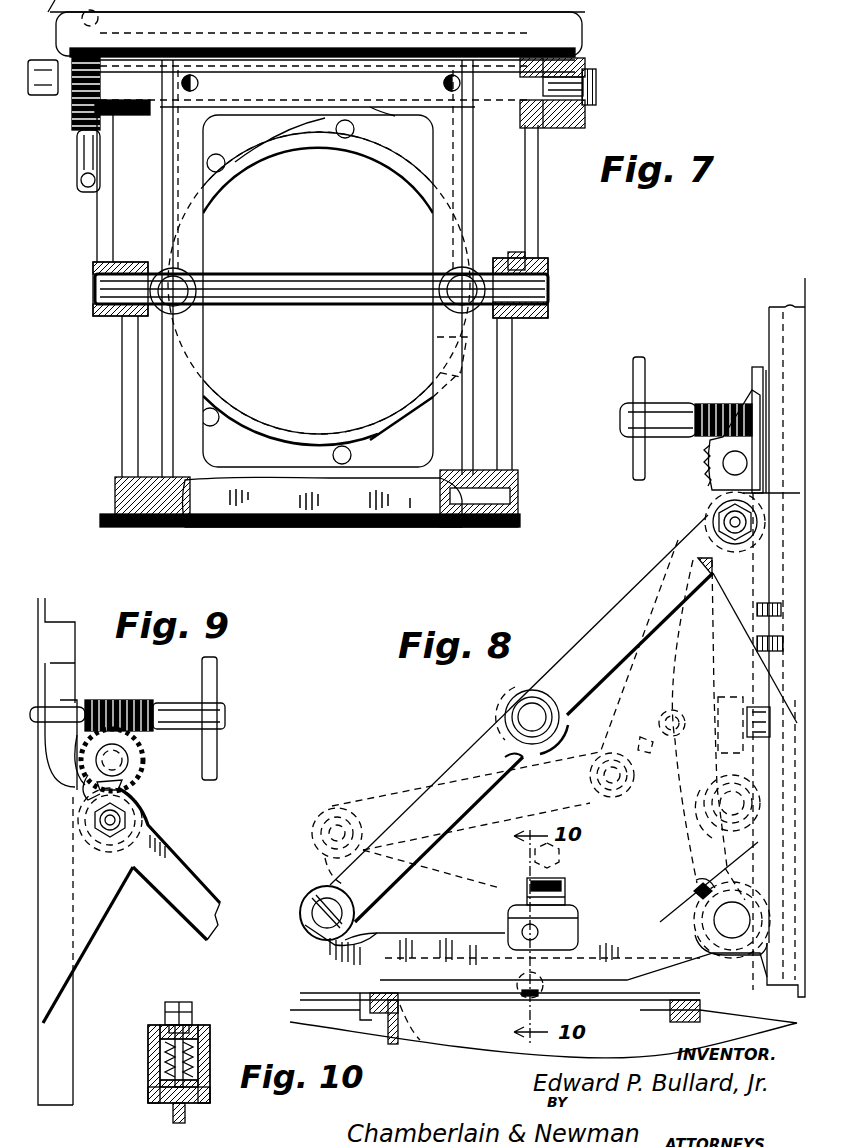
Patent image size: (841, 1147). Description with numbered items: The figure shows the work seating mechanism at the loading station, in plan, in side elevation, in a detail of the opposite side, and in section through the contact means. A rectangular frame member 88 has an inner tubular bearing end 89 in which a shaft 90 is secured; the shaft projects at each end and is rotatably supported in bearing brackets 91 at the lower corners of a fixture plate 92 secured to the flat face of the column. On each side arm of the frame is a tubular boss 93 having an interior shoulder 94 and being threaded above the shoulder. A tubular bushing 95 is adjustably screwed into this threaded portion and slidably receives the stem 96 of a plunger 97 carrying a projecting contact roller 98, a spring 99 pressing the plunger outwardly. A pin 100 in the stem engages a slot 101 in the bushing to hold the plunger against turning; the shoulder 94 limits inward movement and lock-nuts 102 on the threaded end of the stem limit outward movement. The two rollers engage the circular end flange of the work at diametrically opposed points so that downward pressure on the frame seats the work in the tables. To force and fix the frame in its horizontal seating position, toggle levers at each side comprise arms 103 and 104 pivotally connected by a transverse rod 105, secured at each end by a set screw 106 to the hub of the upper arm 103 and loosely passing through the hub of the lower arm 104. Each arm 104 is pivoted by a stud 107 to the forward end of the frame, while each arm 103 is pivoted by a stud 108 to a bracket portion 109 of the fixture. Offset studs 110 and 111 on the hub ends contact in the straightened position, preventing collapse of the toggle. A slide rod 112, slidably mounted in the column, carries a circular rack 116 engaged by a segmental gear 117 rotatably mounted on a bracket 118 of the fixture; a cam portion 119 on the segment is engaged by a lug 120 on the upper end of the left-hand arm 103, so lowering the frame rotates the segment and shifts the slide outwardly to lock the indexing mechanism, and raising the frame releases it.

In FIG. 7, the rectangular frame member 88 is at (463, 175).
In FIG. 8, the rectangular frame member 88 is at (598, 947).
In FIG. 7, the inner tubular bearing end 89 is at (390, 114).
In FIG. 8, the inner tubular bearing end 89 is at (697, 888).
In FIG. 7, the shaft 90 is at (303, 117).
In FIG. 8, the shaft 90 is at (733, 940).
In FIG. 8, the bearing brackets 91 is at (745, 862).
In FIG. 7, the fixture plate 92 is at (316, 36).
In FIG. 8, the fixture plate 92 is at (792, 990).
In FIG. 9, the fixture plate 92 is at (64, 1021).
In FIG. 7, the tubular boss 93 is at (198, 307).
In FIG. 8, the tubular boss 93 is at (570, 925).
In FIG. 10, the tubular boss 93 is at (211, 1057).
In FIG. 10, the interior shoulder 94 is at (186, 1049).
In FIG. 8, the tubular bushing 95 is at (566, 893).
In FIG. 10, the tubular bushing 95 is at (199, 1036).
In FIG. 10, the stem 96 is at (160, 1056).
In FIG. 10, the plunger 97 is at (154, 1094).
In FIG. 8, the contact roller 98 is at (515, 1000).
In FIG. 10, the contact roller 98 is at (186, 1112).
In FIG. 10, the spring 99 is at (199, 1082).
In FIG. 10, the pin 100 is at (192, 1028).
In FIG. 10, the slot 101 is at (195, 1031).
In FIG. 8, the lock-nuts 102 is at (557, 866).
In FIG. 10, the lock-nuts 102 is at (178, 1002).
In FIG. 7, the outer and upper toggle arm 103 is at (112, 221).
In FIG. 8, the outer and upper toggle arm 103 is at (620, 625).
In FIG. 7, the lower and inner toggle arm 104 is at (124, 397).
In FIG. 8, the lower and inner toggle arm 104 is at (440, 787).
In FIG. 7, the rod 105 is at (300, 274).
In FIG. 8, the rod 105 is at (532, 703).
In FIG. 7, the set screw 106 is at (110, 318).
In FIG. 8, the set screw 106 is at (503, 712).
In FIG. 7, the stud 107 is at (120, 495).
In FIG. 7, the stud 108 is at (597, 87).
In FIG. 8, the stud 108 is at (720, 517).
In FIG. 7, the bracket portion 109 is at (586, 62).
In FIG. 8, the bracket portion 109 is at (705, 525).
In FIG. 7, the offset stud 110 is at (527, 262).
In FIG. 8, the offset stud 110 is at (576, 736).
In FIG. 8, the offset stud 111 is at (588, 768).
In FIG. 7, the slide rod 112 is at (80, 162).
In FIG. 8, the slide rod 112 is at (660, 408).
In FIG. 9, the slide rod 112 is at (200, 720).
In FIG. 7, the circular rack 116 is at (76, 124).
In FIG. 8, the circular rack 116 is at (712, 400).
In FIG. 9, the circular rack 116 is at (128, 699).
In FIG. 8, the segmental gear 117 is at (709, 461).
In FIG. 9, the segmental gear 117 is at (133, 765).
In FIG. 8, the bracket 118 is at (756, 388).
In FIG. 9, the bracket 118 is at (84, 700).
In FIG. 9, the cam portion 119 is at (88, 773).
In FIG. 9, the lug 120 is at (122, 790).